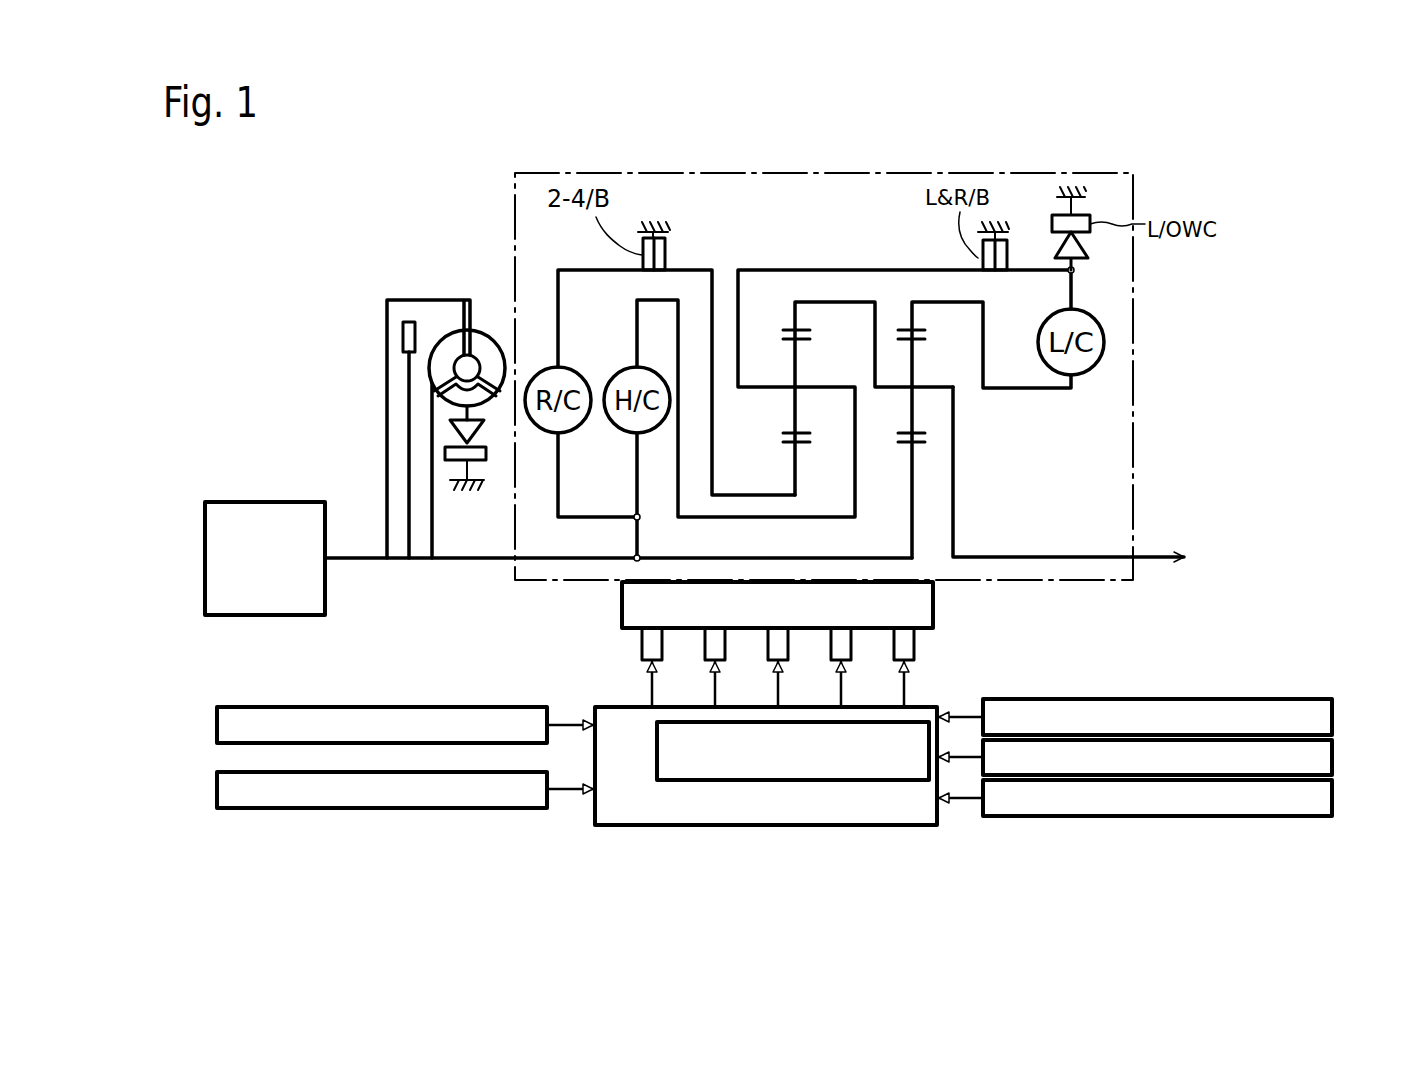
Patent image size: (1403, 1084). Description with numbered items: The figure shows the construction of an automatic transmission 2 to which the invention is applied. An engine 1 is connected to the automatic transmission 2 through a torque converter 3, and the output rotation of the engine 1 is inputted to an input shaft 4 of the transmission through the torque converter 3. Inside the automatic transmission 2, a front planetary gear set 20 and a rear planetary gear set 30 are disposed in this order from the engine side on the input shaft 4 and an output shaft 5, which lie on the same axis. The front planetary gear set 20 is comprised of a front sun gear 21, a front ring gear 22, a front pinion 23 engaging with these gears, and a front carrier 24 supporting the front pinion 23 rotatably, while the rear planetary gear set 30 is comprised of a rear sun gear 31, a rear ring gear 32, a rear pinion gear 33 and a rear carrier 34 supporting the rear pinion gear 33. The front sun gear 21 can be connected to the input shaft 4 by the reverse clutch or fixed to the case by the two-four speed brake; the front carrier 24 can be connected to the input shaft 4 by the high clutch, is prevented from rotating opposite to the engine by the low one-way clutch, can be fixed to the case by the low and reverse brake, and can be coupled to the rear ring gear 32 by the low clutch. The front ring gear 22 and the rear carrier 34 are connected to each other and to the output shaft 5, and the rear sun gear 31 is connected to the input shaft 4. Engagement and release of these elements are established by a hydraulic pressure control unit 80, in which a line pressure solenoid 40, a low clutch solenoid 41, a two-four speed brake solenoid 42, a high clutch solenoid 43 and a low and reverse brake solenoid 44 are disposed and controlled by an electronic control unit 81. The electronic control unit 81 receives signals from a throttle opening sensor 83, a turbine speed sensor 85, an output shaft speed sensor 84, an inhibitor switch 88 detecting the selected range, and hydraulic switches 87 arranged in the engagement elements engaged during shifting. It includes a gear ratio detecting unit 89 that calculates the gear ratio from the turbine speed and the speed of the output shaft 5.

The engine 1 is at (243, 502).
The automatic transmission 2 is at (1140, 193).
The torque converter 3 is at (484, 321).
The input shaft 4 is at (462, 560).
The output shaft 5 is at (1010, 556).
The front planetary gear set 20 is at (850, 342).
The front sun gear 21 is at (784, 445).
The front ring gear 22 is at (782, 330).
The front pinion 23 is at (782, 433).
The front carrier 24 is at (763, 385).
The rear planetary gear set 30 is at (967, 373).
The rear sun gear 31 is at (899, 445).
The rear ring gear 32 is at (926, 330).
The rear pinion gear 33 is at (897, 433).
The rear carrier 34 is at (934, 386).
The line pressure solenoid 40 is at (641, 642).
The low clutch solenoid 41 is at (704, 642).
The 2-4 speed brake solenoid 42 is at (767, 642).
The high clutch solenoid 43 is at (830, 642).
The low and reverse brake solenoid 44 is at (893, 642).
The hydraulic pressure control unit 80 is at (933, 605).
The electronic control unit 81 is at (766, 803).
The throttle opening sensor 83 is at (215, 722).
The output shaft speed sensor 84 is at (1333, 715).
The turbine speed sensor 85 is at (215, 787).
The hydraulic switches (group) 87 is at (1333, 798).
The inhibitor switch 88 is at (1333, 757).
The gear ratio detecting unit 89 is at (657, 728).